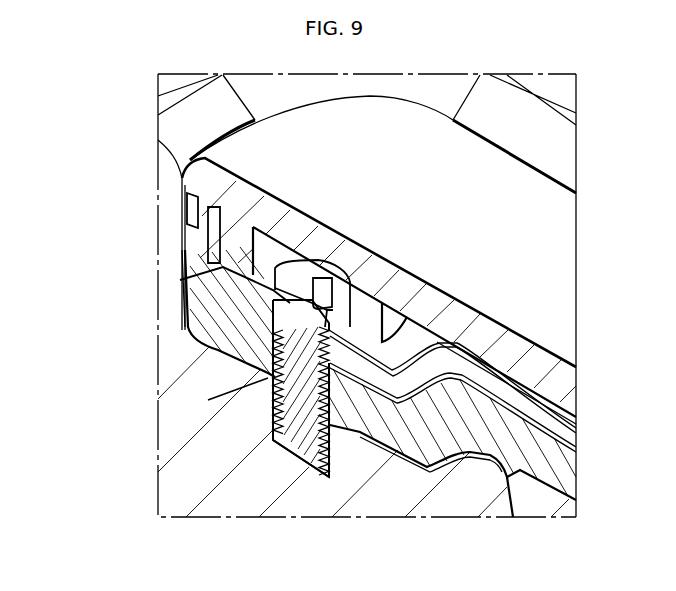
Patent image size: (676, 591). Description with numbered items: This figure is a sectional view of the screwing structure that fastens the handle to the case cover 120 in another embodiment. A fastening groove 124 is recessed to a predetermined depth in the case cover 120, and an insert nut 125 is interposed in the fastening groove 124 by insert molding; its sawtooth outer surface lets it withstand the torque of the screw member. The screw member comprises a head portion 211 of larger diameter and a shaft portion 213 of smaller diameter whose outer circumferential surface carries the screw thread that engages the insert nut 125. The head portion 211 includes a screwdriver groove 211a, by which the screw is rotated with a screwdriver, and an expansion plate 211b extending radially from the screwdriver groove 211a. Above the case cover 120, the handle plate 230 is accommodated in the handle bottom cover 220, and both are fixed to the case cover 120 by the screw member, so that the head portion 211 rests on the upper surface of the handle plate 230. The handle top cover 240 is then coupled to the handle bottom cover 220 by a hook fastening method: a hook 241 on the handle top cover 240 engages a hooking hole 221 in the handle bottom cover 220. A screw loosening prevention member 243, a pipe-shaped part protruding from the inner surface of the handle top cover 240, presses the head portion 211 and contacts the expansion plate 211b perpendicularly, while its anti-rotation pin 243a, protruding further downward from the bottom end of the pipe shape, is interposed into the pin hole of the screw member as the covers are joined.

The case cover 120 is at (238, 505).
The fastening groove 124 is at (296, 450).
The insert nut 125 is at (329, 474).
The head portion 211 is at (161, 314).
The screwdriver groove 211a is at (200, 361).
The expansion plate 211b is at (215, 300).
The shaft portion 213 is at (273, 372).
The handle bottom cover 220 is at (568, 470).
The hooking hole 221 is at (208, 240).
The handle plate 230 is at (568, 428).
The handle top cover 240 is at (568, 394).
The hook 241 is at (185, 207).
The screw loosening prevention member 243 is at (232, 243).
The anti-rotation pin 243a is at (253, 277).